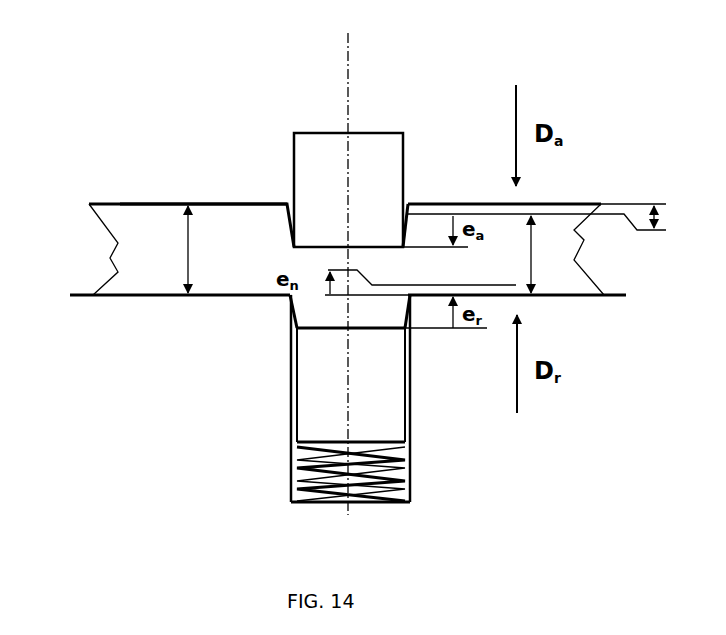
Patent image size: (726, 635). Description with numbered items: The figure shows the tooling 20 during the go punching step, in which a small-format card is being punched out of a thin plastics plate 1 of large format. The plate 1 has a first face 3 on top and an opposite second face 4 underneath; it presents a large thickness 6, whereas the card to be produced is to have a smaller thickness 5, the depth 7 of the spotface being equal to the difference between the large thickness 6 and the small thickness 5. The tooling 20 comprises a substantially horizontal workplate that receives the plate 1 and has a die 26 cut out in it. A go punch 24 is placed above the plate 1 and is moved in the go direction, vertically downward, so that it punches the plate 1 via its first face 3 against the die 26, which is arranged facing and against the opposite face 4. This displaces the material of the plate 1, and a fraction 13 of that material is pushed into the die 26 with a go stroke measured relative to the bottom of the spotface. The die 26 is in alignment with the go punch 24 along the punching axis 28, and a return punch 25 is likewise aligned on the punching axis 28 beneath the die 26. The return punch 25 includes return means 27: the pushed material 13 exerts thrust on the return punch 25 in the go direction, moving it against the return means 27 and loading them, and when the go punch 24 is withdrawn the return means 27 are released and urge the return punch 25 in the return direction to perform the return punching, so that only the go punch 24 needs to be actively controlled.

The tooling 20 is at (82, 50).
The punching axis 28 is at (294, 259).
The plate 1 is at (328, 232).
The first face 3 is at (171, 165).
The second face 4 is at (348, 283).
The go punch 24 is at (307, 182).
The return punch 25 is at (301, 398).
The die 26 is at (293, 328).
The pushed material 13 is at (391, 347).
The return means 27 is at (300, 474).
The large thickness 6 is at (202, 249).
The small thickness 5 is at (545, 254).
The depth 7 is at (551, 218).